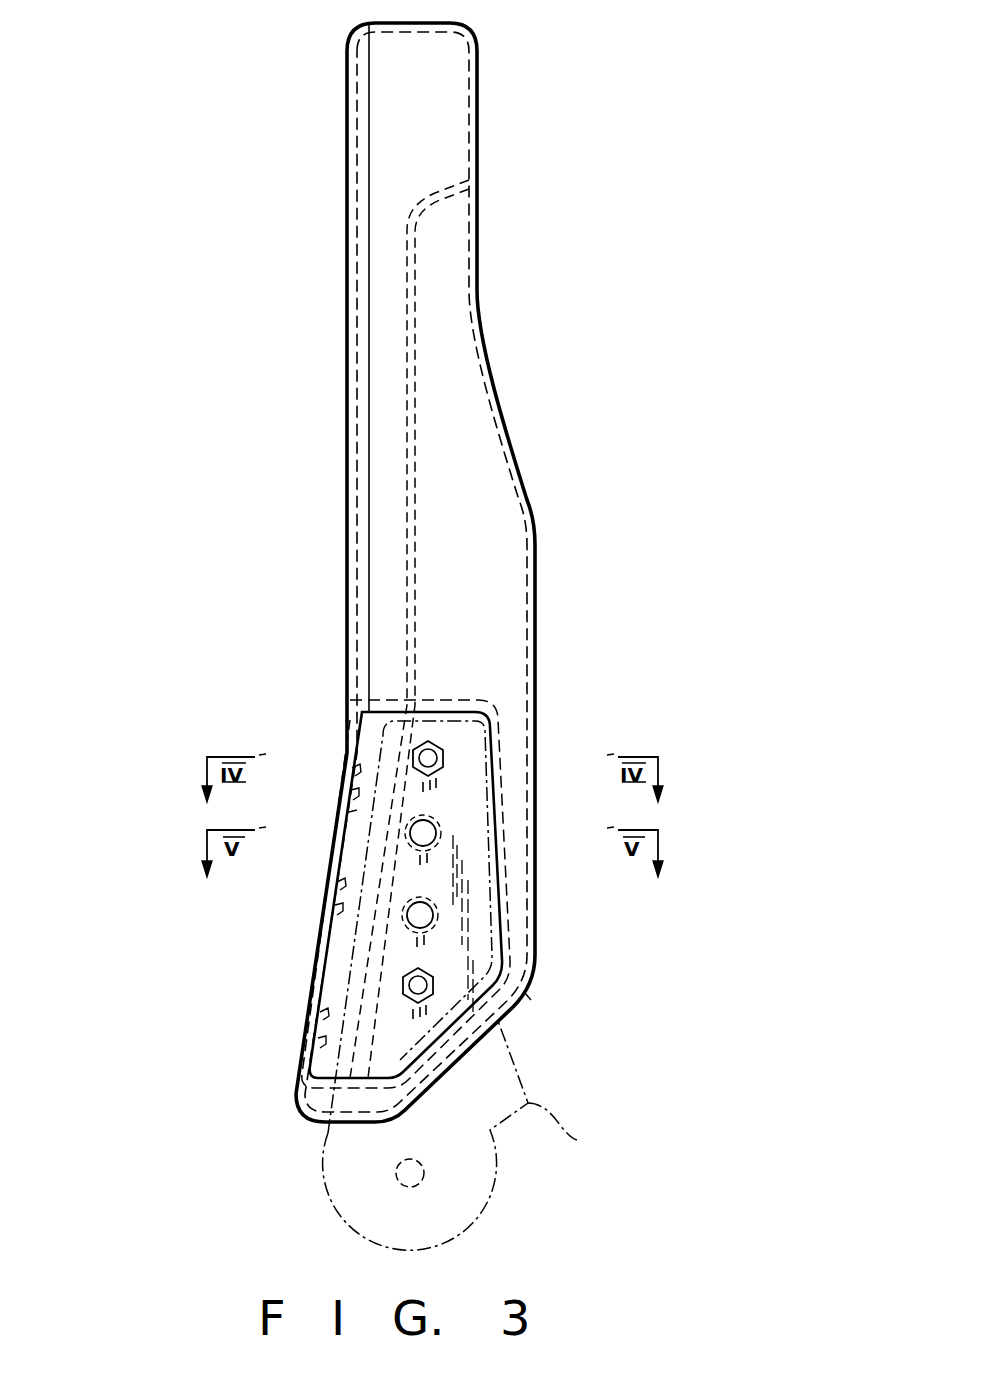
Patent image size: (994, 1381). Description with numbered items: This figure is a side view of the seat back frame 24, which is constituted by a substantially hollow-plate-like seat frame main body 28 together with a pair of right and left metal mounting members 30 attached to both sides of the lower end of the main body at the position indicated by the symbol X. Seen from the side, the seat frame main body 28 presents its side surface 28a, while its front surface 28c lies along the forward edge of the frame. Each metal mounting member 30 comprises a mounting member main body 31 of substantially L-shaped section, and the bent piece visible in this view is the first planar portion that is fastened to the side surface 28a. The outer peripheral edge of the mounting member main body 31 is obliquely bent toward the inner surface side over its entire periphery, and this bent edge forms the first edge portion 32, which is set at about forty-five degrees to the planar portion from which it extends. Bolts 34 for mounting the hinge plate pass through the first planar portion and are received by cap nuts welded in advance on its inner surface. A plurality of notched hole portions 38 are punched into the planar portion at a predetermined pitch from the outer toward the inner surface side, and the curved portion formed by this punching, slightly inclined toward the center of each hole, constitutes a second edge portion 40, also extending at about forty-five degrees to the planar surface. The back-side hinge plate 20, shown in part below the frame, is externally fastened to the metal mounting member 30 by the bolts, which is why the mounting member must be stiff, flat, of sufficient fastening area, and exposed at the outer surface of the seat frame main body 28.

The back-side hinge plate 20 is at (577, 1140).
The seat back frame 24 is at (530, 382).
The seat frame main body 28 is at (470, 492).
The side surface 28a is at (487, 690).
The front surface 28c is at (348, 668).
The metal mounting member 30 is at (452, 955).
The mounting member main body 31 is at (477, 933).
The first edge portion 32 is at (505, 818).
The bolt 34 is at (445, 757).
The notched hole portion 38 is at (355, 780).
The second edge portion 40 is at (432, 830).
The position of mounting member attachment X is at (530, 997).